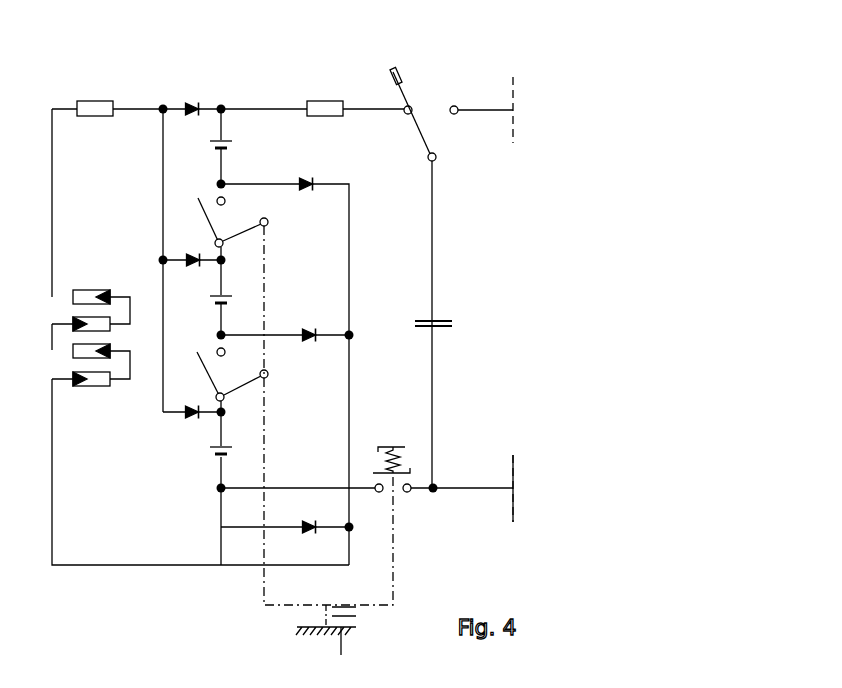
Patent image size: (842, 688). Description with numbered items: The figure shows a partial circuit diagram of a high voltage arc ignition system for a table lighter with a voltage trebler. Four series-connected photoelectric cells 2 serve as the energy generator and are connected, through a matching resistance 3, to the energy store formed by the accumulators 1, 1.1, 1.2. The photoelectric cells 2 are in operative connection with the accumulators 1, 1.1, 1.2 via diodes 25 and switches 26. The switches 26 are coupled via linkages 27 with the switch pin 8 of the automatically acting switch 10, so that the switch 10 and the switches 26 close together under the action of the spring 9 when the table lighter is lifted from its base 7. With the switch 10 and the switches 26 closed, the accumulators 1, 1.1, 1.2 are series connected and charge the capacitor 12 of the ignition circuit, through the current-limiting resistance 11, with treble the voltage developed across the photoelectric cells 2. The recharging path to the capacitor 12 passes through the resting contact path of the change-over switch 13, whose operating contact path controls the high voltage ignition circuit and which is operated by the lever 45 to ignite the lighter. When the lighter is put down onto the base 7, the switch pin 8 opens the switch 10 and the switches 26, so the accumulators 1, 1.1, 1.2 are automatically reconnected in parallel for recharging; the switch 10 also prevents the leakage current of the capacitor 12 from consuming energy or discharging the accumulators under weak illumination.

The accumulator 1 is at (230, 141).
The accumulator 1.1 is at (227, 295).
The accumulator 1.2 is at (228, 446).
The photoelectric cells 2 is at (97, 323).
The matching resistance 3 is at (97, 101).
The base 7 is at (326, 653).
The switch pin 8 is at (356, 616).
The spring 9 is at (401, 460).
The switch 10 is at (380, 458).
The resistance 11 is at (325, 101).
The capacitor 12 is at (438, 318).
The change-over switch 13 is at (423, 134).
The diodes 25 is at (193, 103).
The switches 26 is at (206, 220).
The linkages 27 is at (266, 403).
The lever 45 is at (402, 70).